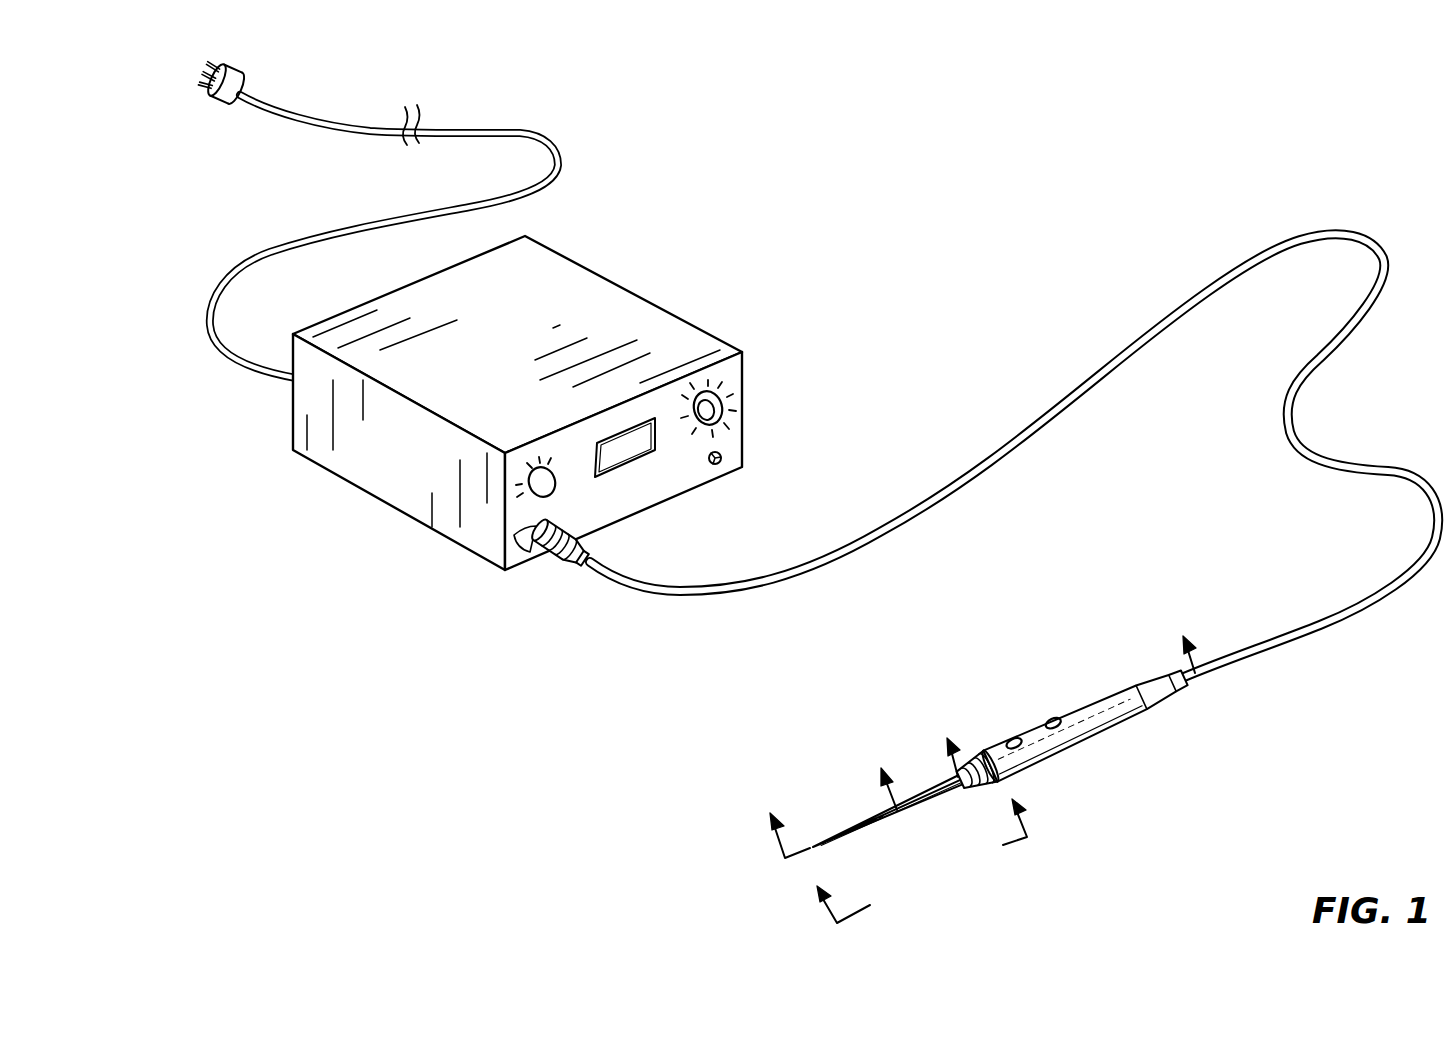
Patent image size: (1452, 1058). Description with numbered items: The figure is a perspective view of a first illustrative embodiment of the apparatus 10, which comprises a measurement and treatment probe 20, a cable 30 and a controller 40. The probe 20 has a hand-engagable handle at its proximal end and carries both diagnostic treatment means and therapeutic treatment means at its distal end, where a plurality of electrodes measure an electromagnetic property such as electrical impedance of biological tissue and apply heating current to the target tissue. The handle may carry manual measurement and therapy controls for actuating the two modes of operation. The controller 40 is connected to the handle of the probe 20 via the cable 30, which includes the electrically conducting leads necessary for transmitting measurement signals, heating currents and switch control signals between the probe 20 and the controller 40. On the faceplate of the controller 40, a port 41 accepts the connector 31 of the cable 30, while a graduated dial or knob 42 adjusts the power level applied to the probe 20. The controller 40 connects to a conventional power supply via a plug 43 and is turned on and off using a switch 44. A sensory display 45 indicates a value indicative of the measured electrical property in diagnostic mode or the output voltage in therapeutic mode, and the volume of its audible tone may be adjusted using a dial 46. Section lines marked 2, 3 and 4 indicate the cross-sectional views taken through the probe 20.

The apparatus 10 is at (1088, 202).
The measurement and treatment probe 20 is at (960, 674).
The cable 30 is at (1062, 392).
The connector 31 is at (567, 557).
The controller 40 is at (670, 301).
The port 41 is at (513, 539).
The graduated dial or knob 42 is at (723, 406).
The plug 43 is at (200, 82).
The switch 44 is at (723, 455).
The sensory display 45 is at (657, 418).
The dial 46 is at (527, 477).
The section line for FIG. 2 is at (821, 801).
The section line for FIG. 3 is at (920, 851).
The section line for FIG. 4 is at (1064, 693).